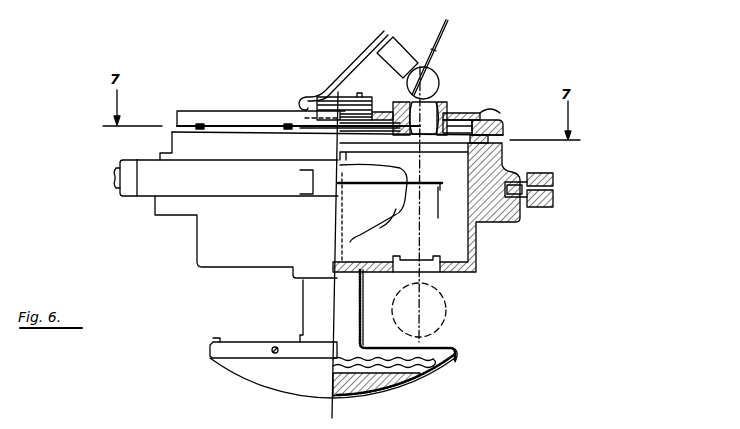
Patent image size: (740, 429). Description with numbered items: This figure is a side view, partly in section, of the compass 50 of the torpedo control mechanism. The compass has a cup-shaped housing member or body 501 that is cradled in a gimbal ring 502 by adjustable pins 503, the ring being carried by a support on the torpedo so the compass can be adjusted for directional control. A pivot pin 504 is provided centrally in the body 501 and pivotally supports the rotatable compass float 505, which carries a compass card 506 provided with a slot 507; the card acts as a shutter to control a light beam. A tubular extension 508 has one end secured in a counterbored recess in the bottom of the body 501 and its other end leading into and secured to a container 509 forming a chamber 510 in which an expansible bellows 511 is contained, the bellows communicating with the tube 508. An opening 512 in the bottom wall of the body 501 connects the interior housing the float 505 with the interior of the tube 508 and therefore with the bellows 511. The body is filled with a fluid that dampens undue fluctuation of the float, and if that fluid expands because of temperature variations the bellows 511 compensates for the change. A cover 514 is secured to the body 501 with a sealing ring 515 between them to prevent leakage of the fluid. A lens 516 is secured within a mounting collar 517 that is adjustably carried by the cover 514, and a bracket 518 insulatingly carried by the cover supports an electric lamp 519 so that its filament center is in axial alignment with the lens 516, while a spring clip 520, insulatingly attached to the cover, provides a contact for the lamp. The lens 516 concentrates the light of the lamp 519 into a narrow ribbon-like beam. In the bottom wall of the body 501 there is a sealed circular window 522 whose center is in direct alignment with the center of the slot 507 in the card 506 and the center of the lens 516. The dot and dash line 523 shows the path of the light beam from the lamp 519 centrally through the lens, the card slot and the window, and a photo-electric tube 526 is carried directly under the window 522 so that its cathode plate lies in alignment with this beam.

The compass 50 is at (281, 252).
The housing member 501 is at (495, 153).
The gimbal ring 502 is at (550, 202).
The adjustable pins 503 is at (553, 188).
The pivot pin 504 is at (350, 241).
The compass float 505 is at (396, 209).
The compass card 506 is at (440, 209).
The slot 507 is at (428, 183).
The tubular extension 508 is at (360, 320).
The container 509 is at (428, 383).
The chamber 510 is at (448, 365).
The bellows 511 is at (403, 362).
The opening 512 is at (355, 274).
The cover 514 is at (504, 128).
The sealing ring 515 is at (472, 140).
The lens 516 is at (436, 110).
The mounting collar 517 is at (452, 113).
The bracket 518 is at (444, 50).
The electric lamp 519 is at (432, 80).
The spring clip 520 is at (371, 44).
The window 522 is at (413, 258).
The dot and dash line 523 is at (419, 303).
The photo-electric tube 526 is at (443, 313).